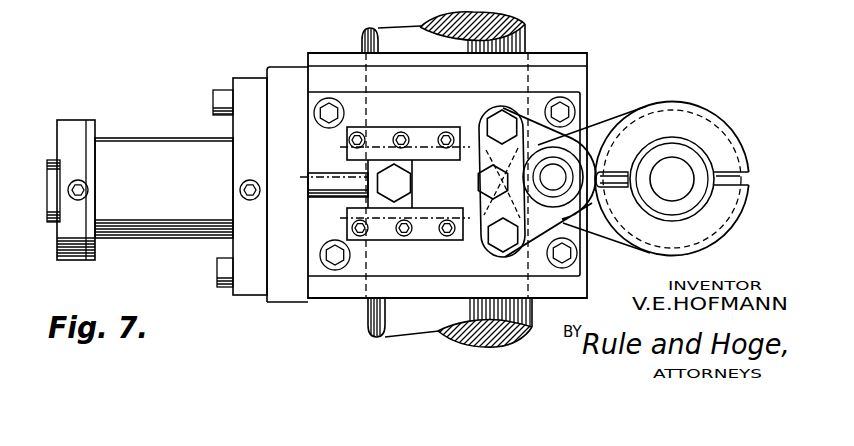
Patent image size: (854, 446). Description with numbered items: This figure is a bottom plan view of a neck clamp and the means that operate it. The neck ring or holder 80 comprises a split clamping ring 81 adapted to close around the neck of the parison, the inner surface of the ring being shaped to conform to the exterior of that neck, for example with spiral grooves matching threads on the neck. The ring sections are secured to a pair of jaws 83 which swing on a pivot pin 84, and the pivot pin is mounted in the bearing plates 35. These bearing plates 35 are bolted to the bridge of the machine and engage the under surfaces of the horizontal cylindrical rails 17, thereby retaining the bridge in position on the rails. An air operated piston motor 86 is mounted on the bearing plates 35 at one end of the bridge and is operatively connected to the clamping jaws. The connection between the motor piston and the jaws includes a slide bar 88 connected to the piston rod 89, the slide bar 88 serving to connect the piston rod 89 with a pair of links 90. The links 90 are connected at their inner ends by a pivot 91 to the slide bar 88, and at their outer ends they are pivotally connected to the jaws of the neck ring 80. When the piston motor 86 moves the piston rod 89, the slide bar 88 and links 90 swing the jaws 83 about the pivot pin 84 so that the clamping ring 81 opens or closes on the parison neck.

The horizontal cylindrical rails 17 is at (383, 40).
The bearing plates 35 is at (334, 297).
The neck ring 80 is at (704, 99).
The split clamping ring 81 is at (730, 173).
The jaws 83 is at (708, 119).
The pivot pin 84 is at (546, 184).
The air operated piston motor 86 is at (137, 153).
The slide bar 88 is at (468, 153).
The piston rod 89 is at (330, 186).
The links 90 is at (487, 157).
The pivot 91 is at (490, 184).